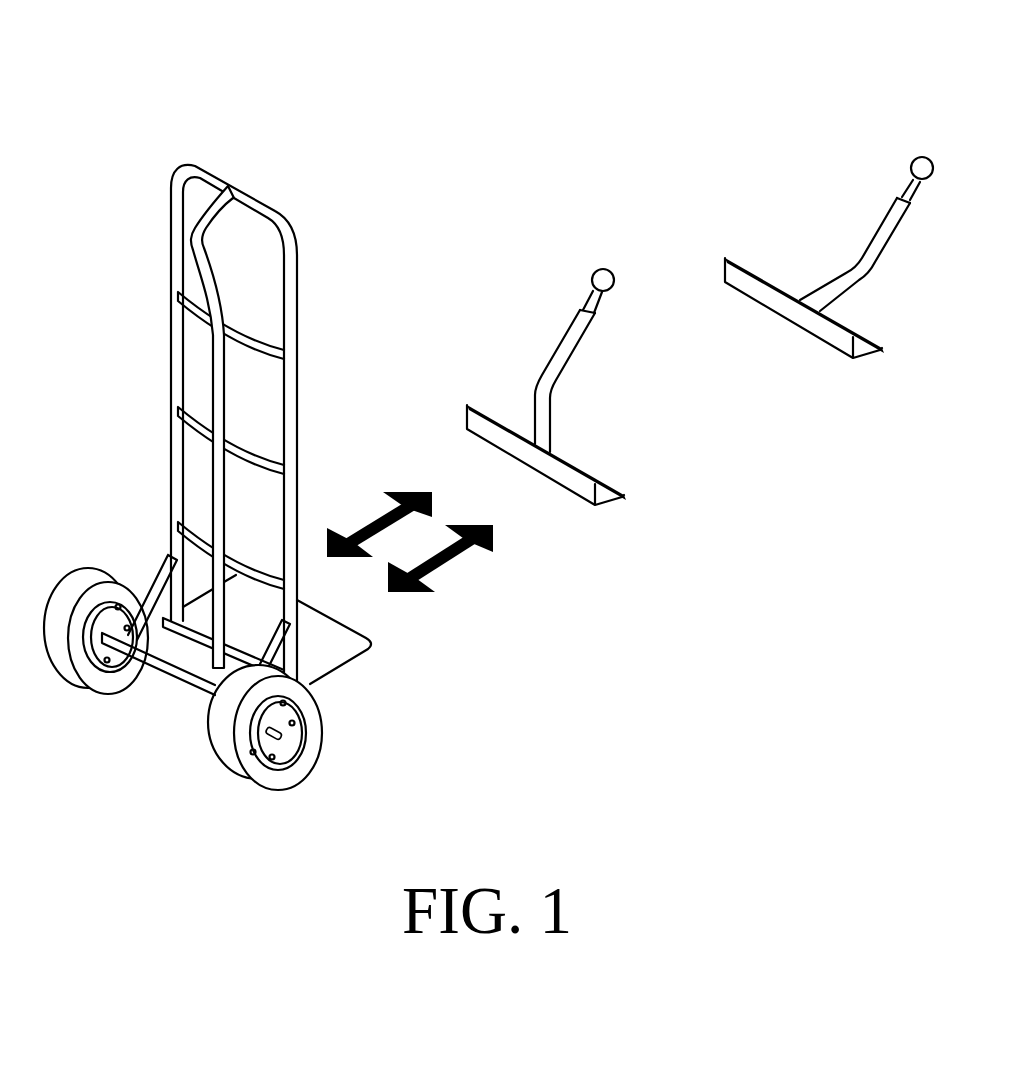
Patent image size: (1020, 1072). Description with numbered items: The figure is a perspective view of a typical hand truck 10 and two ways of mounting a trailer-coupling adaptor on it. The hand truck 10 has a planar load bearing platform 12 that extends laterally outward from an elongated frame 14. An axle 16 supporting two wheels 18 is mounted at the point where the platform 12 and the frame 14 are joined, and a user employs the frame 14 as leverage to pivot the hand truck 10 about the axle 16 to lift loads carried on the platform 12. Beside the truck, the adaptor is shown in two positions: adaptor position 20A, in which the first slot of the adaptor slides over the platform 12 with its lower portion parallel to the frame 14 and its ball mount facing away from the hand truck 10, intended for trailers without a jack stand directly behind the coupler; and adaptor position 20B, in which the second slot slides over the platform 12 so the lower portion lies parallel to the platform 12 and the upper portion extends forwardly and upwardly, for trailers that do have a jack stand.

The hand truck 10 is at (300, 109).
The load bearing platform 12 is at (373, 647).
The frame 14 is at (276, 211).
The axle 16 is at (168, 673).
The wheels 18 is at (312, 750).
The adaptor position 20A is at (628, 397).
The adaptor position 20B is at (848, 202).